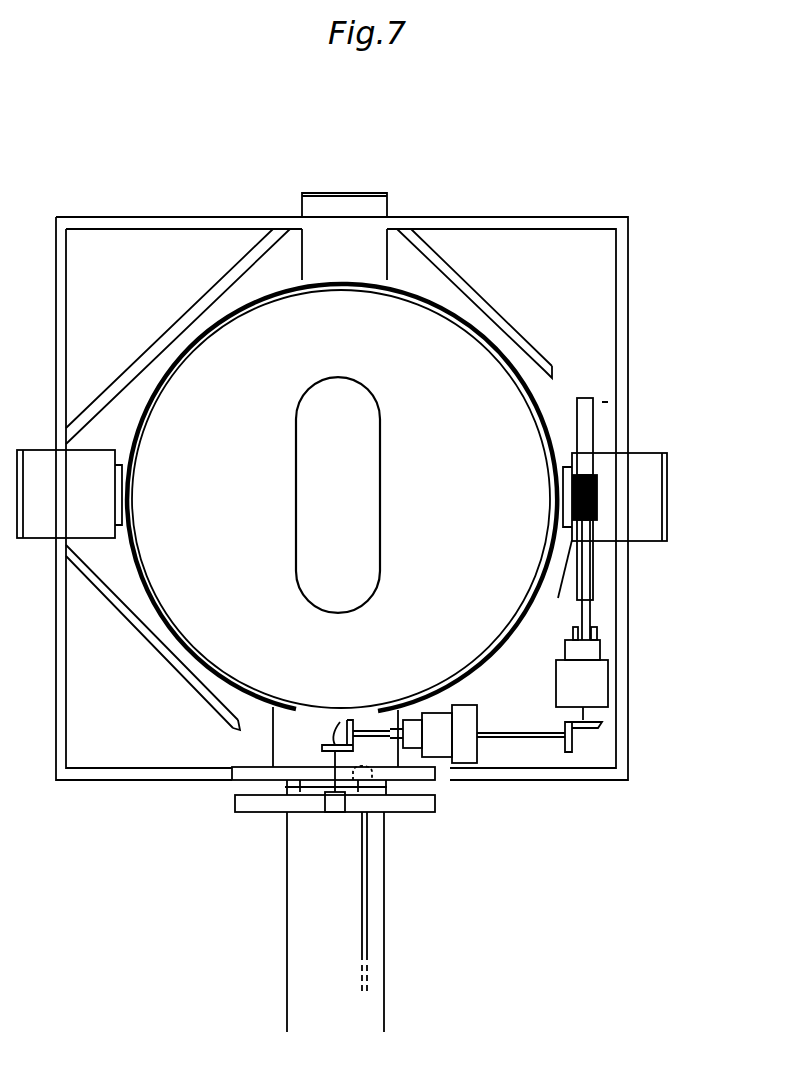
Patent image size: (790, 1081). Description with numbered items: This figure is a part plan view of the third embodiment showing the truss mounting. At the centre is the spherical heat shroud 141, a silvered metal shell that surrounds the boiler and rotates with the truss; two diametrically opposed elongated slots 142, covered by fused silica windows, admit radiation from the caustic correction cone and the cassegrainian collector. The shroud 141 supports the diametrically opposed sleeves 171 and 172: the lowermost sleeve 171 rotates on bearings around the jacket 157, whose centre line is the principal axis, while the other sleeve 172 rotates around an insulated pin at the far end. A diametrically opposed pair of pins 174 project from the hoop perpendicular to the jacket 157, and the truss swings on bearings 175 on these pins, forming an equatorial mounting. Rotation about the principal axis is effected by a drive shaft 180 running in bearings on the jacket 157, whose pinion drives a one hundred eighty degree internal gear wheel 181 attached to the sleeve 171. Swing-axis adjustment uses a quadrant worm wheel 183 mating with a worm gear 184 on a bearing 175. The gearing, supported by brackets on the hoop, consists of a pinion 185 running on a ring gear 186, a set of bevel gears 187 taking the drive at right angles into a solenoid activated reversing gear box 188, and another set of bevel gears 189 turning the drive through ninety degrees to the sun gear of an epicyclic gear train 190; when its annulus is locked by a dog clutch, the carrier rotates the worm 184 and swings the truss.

The shroud 141 is at (341, 499).
The slots 142 is at (338, 495).
The jacket 157 is at (384, 942).
The sleeve 171 is at (277, 750).
The sleeve 172 is at (344, 236).
The pins 174 is at (319, 479).
The bearings 175 is at (342, 495).
The drive shaft 180 is at (360, 905).
The internal gear wheel 181 is at (233, 768).
The quadrant worm wheel 183 is at (582, 412).
The worm gear 184 is at (598, 512).
The pinion 185 is at (335, 806).
The ring gear 186 is at (252, 802).
The bevel gears 187 is at (330, 756).
The reversing gear box 188 is at (468, 748).
The bevel gears 189 is at (544, 737).
The epicyclic gear train 190 is at (582, 673).